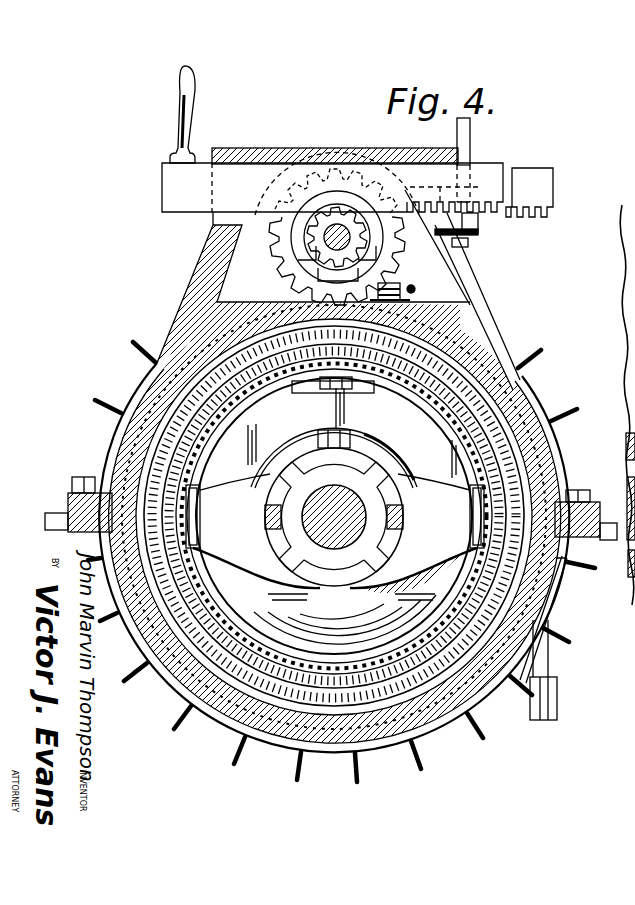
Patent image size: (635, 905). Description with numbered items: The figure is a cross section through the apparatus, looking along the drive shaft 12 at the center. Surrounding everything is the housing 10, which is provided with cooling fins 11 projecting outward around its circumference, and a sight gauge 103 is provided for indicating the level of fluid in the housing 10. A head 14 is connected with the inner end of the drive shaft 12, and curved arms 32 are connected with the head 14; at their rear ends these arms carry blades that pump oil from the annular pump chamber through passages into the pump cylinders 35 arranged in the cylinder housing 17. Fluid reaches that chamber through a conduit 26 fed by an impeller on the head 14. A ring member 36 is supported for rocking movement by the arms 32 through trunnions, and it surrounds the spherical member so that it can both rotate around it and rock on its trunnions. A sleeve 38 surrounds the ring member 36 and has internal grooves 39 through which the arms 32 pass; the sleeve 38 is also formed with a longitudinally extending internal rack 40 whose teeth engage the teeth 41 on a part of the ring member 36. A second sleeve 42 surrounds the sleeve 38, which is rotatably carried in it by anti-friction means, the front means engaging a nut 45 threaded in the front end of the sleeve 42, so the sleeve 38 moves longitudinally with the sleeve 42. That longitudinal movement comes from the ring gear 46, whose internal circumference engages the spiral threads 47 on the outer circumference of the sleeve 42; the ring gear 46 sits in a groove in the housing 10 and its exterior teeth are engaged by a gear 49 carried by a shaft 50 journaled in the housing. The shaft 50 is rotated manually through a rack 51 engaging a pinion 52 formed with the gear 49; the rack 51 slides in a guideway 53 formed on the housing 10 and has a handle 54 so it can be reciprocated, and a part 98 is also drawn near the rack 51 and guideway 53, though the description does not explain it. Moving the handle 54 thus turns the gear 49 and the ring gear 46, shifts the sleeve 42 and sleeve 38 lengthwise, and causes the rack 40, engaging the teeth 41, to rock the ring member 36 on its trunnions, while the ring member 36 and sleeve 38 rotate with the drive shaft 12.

The housing 10 is at (503, 324).
The cooling fins 11 is at (118, 402).
The drive shaft 12 is at (356, 536).
The head 14 is at (365, 468).
The cylinder housing 17 is at (626, 300).
The conduit 26 is at (456, 292).
The curved arms 32 is at (230, 492).
The pump cylinders 35 is at (626, 438).
The ring member 36 is at (283, 638).
The sleeve 38 is at (443, 635).
The internal grooves 39 is at (196, 556).
The internal rack 40 is at (308, 389).
The teeth 41 is at (370, 388).
The second sleeve 42 is at (521, 603).
The nut 45 is at (285, 687).
The ring gear 46 is at (178, 692).
The spiral threads 47 is at (522, 632).
The gear 49 is at (300, 297).
The shaft 50 is at (274, 256).
The rack 51 is at (195, 213).
The pinion 52 is at (401, 285).
The guideway 53 is at (261, 160).
The handle 54 is at (197, 110).
The stop pin 98 is at (471, 135).
The sight gauge 103 is at (550, 677).